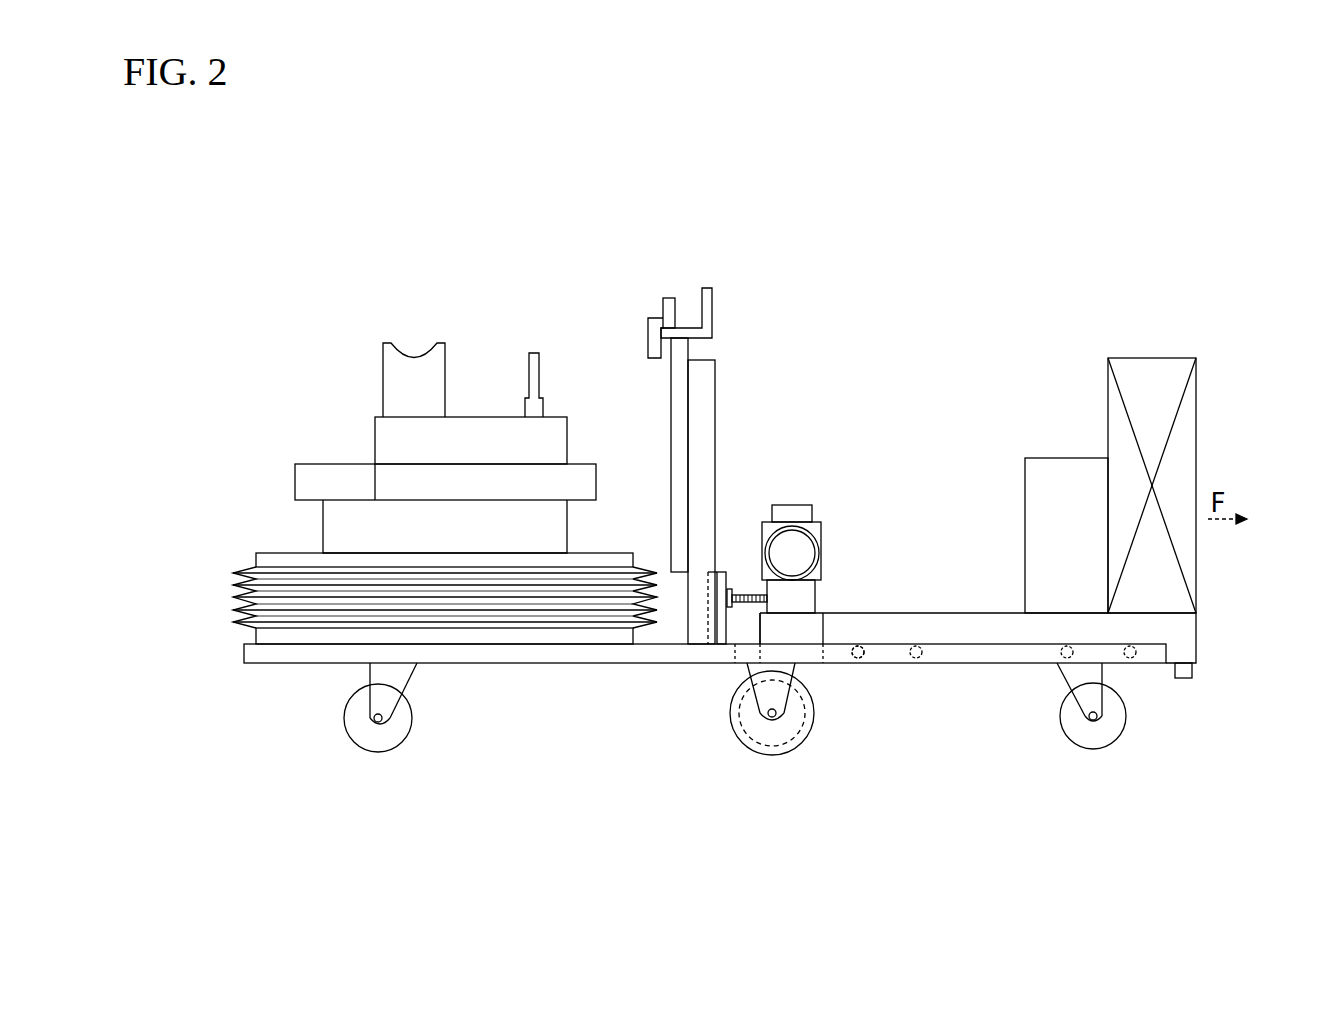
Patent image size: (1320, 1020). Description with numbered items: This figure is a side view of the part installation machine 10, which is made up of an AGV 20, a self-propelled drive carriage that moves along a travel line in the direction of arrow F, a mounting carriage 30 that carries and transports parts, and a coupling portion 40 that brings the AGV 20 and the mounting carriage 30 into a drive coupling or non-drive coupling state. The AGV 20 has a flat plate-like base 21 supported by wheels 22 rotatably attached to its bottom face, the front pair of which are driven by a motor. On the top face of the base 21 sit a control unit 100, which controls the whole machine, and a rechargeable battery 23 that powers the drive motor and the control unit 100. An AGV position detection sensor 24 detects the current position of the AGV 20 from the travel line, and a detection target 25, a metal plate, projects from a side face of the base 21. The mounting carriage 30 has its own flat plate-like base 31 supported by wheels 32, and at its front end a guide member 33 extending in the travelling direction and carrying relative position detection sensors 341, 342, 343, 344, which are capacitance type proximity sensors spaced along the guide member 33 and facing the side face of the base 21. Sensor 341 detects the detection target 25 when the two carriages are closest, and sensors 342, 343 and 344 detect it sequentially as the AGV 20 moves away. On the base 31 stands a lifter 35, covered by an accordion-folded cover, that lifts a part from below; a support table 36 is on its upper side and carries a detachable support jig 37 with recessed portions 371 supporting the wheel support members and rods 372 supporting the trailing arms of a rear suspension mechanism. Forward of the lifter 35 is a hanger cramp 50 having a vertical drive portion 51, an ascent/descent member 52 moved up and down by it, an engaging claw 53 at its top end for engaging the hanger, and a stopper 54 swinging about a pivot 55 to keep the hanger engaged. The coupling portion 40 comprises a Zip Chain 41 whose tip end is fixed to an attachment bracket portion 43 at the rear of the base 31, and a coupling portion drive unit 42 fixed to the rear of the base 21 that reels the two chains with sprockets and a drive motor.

The part installation machine 10 is at (1214, 252).
The AGV 20 is at (1212, 381).
The base 21 is at (1197, 630).
The wheels 22 is at (1117, 722).
The rechargeable battery 23 is at (1067, 462).
The AGV position detection sensor 24 is at (1195, 668).
The detection target 25 is at (860, 646).
The mounting carriage 30 is at (262, 424).
The base 31 is at (244, 654).
The wheels 32 is at (407, 713).
The guide members 33 is at (963, 663).
The lifter 35 is at (232, 565).
The support table 36 is at (305, 480).
The support jig 37 is at (375, 440).
The coupling portion 40 is at (800, 490).
The Zip Chain 41 is at (749, 594).
The coupling portion drive unit 42 is at (822, 548).
The attachment bracket portion 43 is at (718, 570).
The hanger cramp 50 is at (705, 274).
The vertical drive portion 51 is at (715, 420).
The ascent/descent member 52 is at (678, 440).
The engaging claw 53 is at (710, 298).
The stopper 54 is at (669, 298).
The pivot 55 is at (655, 312).
The control unit 100 is at (1149, 362).
The relative position detection sensor 341 is at (858, 658).
The relative position detection sensor 342 is at (916, 658).
The relative position detection sensor 343 is at (1063, 660).
The relative position detection sensor 344 is at (1134, 660).
The recessed portions 371 is at (396, 347).
The rods 372 is at (534, 352).